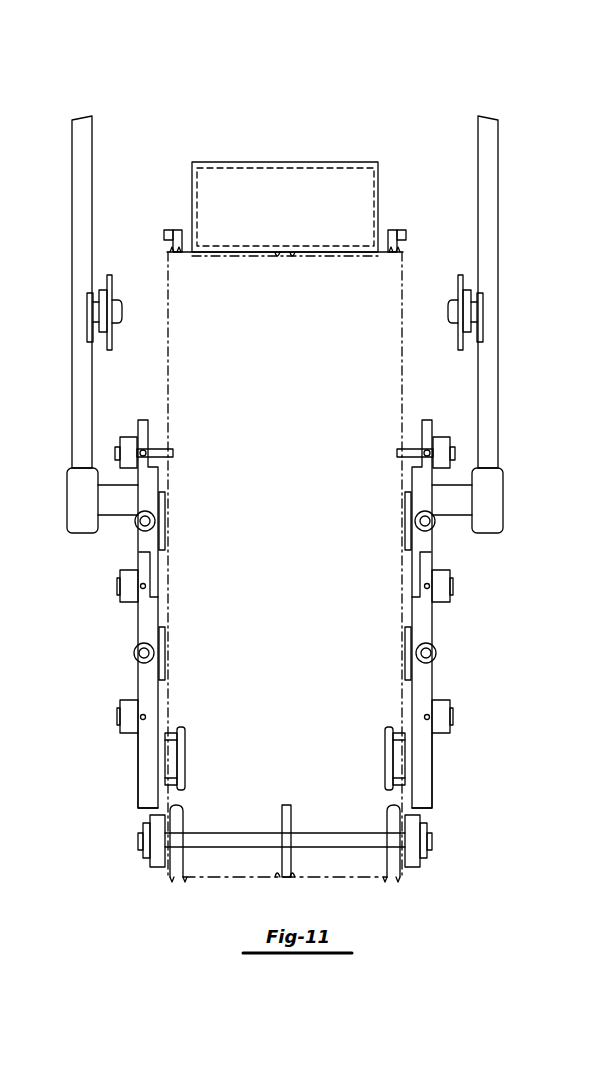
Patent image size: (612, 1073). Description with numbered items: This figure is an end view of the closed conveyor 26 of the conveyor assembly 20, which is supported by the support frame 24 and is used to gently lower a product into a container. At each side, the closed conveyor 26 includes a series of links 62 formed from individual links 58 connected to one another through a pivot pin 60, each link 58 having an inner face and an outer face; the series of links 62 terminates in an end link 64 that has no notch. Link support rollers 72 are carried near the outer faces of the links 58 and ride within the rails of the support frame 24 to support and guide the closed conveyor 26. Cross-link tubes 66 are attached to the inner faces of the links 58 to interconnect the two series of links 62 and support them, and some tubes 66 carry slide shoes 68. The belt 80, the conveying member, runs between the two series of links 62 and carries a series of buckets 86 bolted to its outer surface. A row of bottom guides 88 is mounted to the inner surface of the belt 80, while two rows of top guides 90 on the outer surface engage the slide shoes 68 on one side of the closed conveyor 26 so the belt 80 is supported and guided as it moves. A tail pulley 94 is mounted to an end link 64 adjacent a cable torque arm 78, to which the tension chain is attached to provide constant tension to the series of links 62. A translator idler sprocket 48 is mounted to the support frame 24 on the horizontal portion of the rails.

The conveyor assembly 20 is at (347, 110).
The support frame 24 is at (80, 420).
The closed conveyor 26 is at (137, 540).
The translator idler sprocket 48 is at (110, 275).
The link 58 is at (153, 615).
The pivot pin 60 is at (158, 450).
The series of links 62 is at (174, 575).
The end link 64 is at (138, 757).
The cross-link tube 66 is at (262, 838).
The slide shoe 68 is at (170, 230).
The link support roller 72 is at (118, 715).
The cable torque arm 78 is at (420, 860).
The belt 80 is at (200, 322).
The bucket 86 is at (290, 175).
The bottom guide 88 is at (278, 262).
The top guide 90 is at (165, 252).
The tail pulley 94 is at (178, 805).